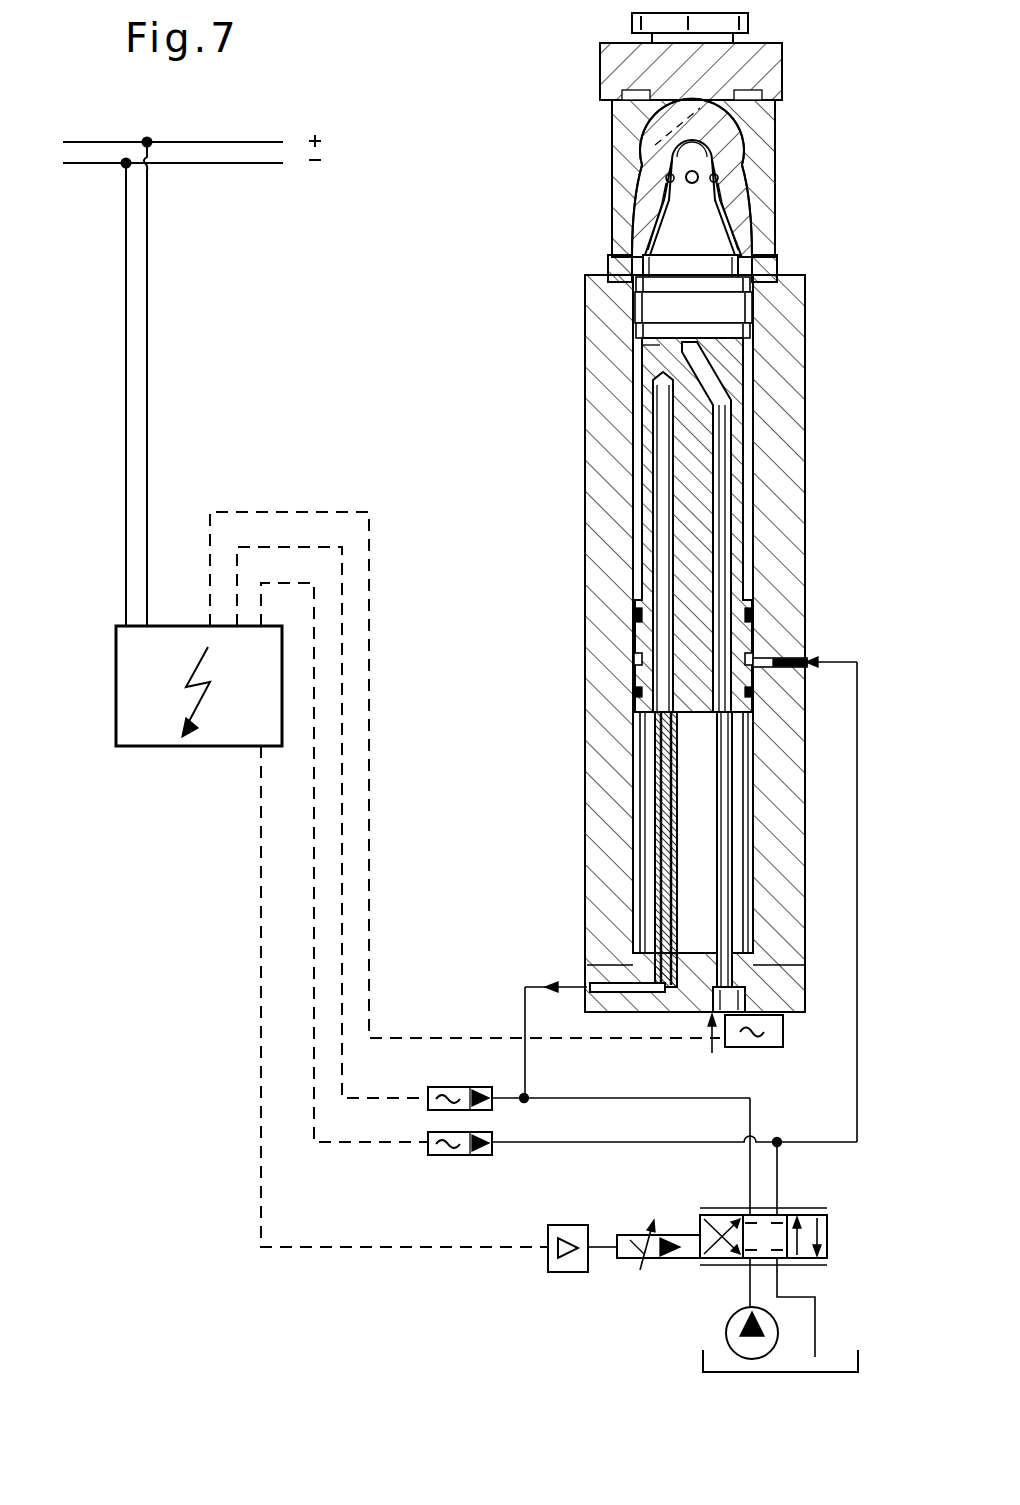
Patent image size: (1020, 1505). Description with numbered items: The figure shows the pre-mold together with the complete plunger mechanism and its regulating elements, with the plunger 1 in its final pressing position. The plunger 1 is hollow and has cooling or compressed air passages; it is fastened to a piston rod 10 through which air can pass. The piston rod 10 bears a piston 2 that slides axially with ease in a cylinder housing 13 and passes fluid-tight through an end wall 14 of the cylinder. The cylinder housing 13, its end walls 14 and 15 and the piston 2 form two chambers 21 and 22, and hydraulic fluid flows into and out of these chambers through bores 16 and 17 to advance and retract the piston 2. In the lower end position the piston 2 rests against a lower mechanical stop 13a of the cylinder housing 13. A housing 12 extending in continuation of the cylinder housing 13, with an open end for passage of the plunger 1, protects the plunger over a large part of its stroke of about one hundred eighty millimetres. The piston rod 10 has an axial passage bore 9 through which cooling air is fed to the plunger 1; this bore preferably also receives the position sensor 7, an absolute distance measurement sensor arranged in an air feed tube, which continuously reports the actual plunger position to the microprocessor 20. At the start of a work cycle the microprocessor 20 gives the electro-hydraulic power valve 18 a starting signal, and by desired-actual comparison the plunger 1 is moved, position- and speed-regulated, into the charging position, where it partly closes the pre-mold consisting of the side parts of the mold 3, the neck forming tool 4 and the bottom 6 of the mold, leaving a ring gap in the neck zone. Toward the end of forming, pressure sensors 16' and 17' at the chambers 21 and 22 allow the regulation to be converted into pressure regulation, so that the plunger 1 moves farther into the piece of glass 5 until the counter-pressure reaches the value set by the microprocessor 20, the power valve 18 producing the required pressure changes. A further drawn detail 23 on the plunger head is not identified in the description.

The plunger 1 is at (712, 176).
The piston 2 is at (640, 690).
The side parts of the mold 3 is at (750, 213).
The neck forming tool 4 is at (770, 263).
The piece of glass 5 is at (720, 125).
The bottom of the mold 6 is at (745, 65).
The position sensor 7 is at (735, 900).
The axial passage bore 9 is at (722, 490).
The piston rod 10 is at (686, 540).
The housing 12 is at (606, 298).
The cylinder housing 13 is at (618, 870).
The lower mechanical stop 13a is at (633, 975).
The end wall 14 is at (635, 638).
The end wall 15 is at (651, 358).
The bore 16 is at (805, 866).
The pressure sensor 16' is at (642, 1172).
The bore 17 is at (590, 1018).
The pressure sensor 17' is at (562, 1080).
The electro-hydraulic power valve 18 is at (829, 1235).
The microprocessor 20 is at (158, 717).
The chamber 21 is at (640, 660).
The chamber 22 is at (660, 423).
The holes 23 is at (666, 180).